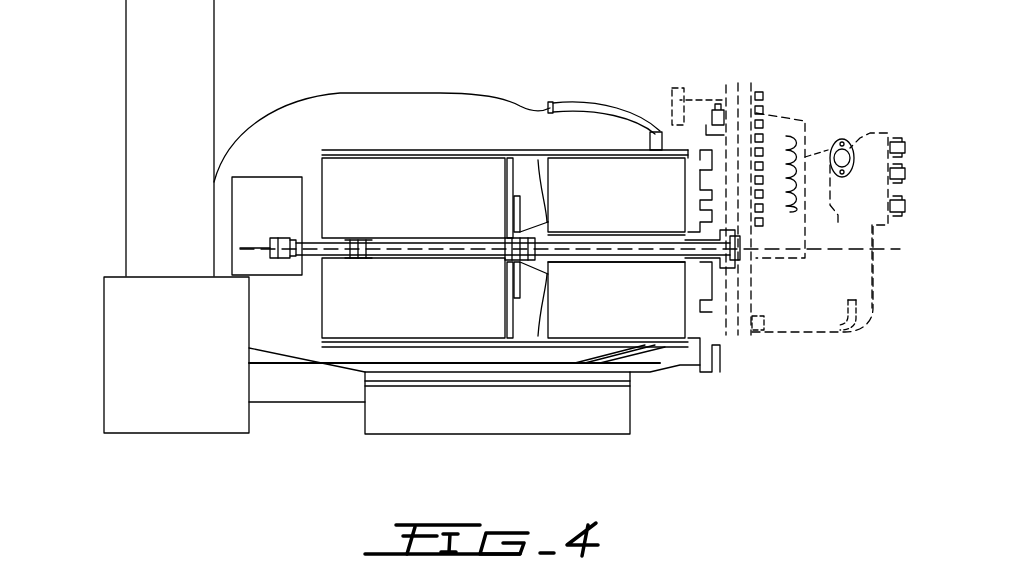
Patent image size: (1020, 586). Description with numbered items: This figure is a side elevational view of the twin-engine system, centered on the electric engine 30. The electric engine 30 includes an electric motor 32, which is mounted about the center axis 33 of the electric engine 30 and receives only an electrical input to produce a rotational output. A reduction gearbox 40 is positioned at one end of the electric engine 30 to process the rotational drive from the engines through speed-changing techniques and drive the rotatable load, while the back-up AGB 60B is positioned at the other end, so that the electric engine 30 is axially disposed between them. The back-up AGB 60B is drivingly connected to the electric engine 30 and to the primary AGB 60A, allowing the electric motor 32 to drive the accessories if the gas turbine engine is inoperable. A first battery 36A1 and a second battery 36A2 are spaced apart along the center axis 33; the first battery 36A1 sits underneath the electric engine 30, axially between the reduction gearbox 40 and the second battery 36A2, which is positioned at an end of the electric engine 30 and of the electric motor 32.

The electric engine 30 is at (402, 150).
The electric motor 32 is at (452, 186).
The center axis 33 is at (402, 256).
The first battery 36A1 is at (575, 403).
The second battery 36A2 is at (130, 341).
The reduction gearbox 40 is at (790, 345).
The primary AGB 60A is at (143, 90).
The back-up AGB 60B is at (278, 176).